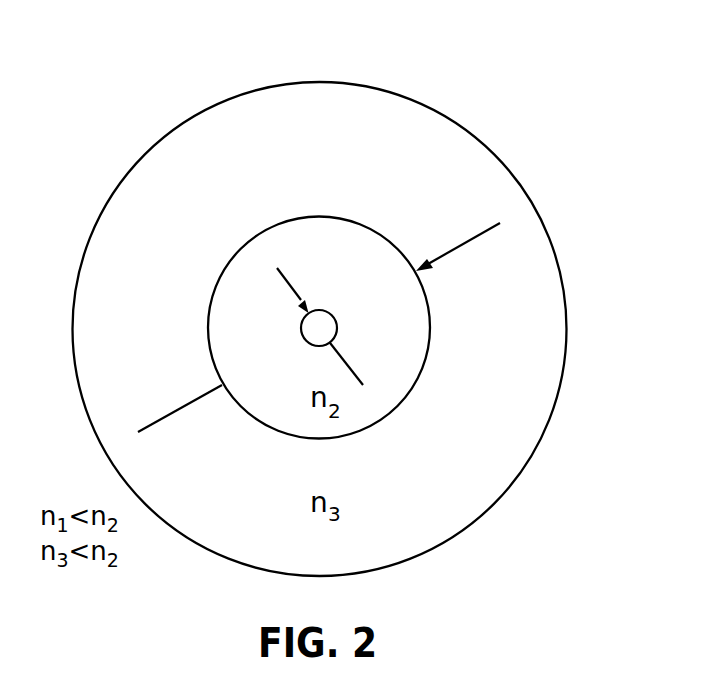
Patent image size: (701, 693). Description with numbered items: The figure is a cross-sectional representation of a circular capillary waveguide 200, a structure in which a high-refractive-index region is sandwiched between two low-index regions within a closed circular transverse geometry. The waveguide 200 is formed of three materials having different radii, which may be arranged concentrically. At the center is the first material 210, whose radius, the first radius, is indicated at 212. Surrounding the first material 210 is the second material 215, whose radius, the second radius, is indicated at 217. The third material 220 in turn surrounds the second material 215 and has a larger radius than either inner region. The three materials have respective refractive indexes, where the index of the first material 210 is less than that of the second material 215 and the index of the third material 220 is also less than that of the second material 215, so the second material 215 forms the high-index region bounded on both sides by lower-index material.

The circular capillary waveguide 200 is at (512, 101).
The first material 210 is at (339, 323).
The radius R1 212 is at (288, 290).
The second material 215 is at (398, 370).
The radius R2 217 is at (457, 250).
The third material 220 is at (483, 482).